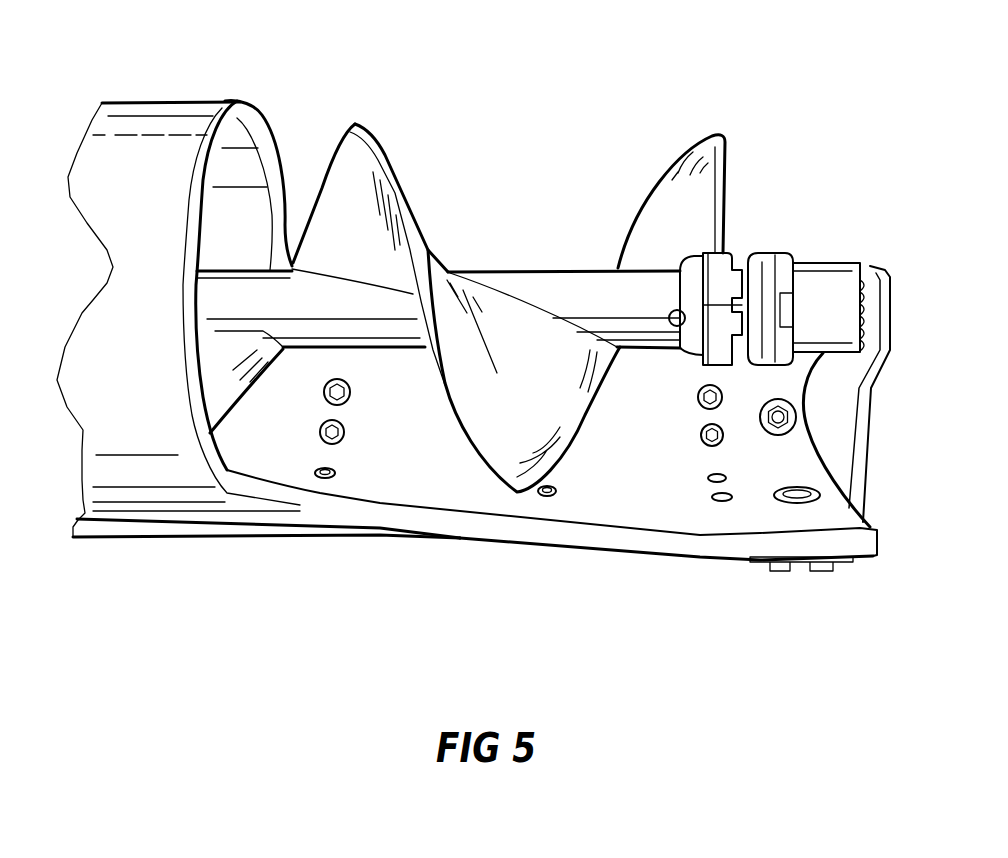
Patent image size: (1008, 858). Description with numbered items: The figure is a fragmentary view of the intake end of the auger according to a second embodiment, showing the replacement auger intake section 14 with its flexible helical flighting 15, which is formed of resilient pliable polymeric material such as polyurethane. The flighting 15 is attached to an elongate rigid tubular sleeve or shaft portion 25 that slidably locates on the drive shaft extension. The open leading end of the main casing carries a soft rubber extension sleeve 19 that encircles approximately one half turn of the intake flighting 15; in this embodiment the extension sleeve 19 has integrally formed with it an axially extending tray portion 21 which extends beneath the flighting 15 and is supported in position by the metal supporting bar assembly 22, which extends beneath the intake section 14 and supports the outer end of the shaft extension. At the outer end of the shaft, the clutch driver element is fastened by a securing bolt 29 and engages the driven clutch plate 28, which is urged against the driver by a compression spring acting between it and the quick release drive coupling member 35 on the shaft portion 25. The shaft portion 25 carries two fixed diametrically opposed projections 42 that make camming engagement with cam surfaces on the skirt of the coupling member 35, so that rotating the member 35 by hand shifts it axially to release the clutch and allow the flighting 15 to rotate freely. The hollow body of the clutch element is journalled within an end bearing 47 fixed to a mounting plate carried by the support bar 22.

The replacement auger intake section 14 is at (601, 178).
The flexible helical flighting 15 is at (397, 195).
The extension sleeve 19 is at (175, 163).
The tray portion 21 is at (433, 486).
The supporting bar assembly 22 is at (252, 525).
The tubular sleeve or shaft portion 25 is at (550, 293).
The driven clutch plate 28 is at (800, 383).
The securing bolt 29 is at (787, 257).
The quick release drive coupling member 35 is at (720, 278).
The radially projecting projections 42 is at (677, 327).
The end bearing 47 is at (840, 287).